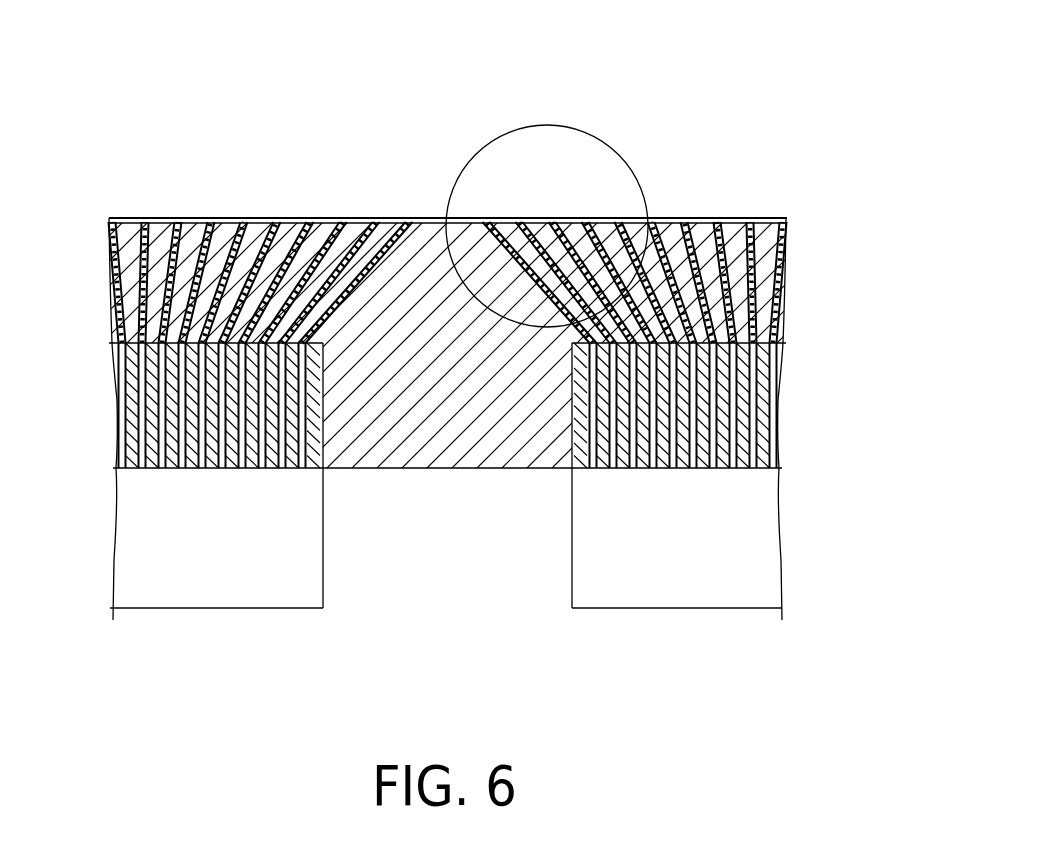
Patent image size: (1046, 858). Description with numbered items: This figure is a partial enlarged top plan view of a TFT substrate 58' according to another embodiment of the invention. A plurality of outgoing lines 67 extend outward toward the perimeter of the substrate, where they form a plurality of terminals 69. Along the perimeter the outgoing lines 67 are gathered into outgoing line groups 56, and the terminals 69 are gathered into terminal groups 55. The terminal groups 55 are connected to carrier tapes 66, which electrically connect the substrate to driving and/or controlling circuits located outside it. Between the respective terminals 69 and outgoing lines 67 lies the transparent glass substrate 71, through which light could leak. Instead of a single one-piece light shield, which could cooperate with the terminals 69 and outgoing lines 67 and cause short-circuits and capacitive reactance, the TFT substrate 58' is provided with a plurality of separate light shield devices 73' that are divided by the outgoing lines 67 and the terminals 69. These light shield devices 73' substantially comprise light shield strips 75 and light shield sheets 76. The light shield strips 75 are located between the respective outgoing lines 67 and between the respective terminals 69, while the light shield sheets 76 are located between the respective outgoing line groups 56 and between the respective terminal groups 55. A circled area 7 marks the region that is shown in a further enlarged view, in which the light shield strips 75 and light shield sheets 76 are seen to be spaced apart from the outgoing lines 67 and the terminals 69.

The TFT substrate 58' is at (846, 55).
The area 7 is at (577, 125).
The outgoing line groups 56 is at (430, 178).
The light shield strips 75 is at (168, 218).
The outgoing lines 67 is at (120, 287).
The terminals 69 is at (130, 397).
The terminal groups 55 is at (320, 477).
The light shield devices 73' is at (364, 438).
The light shield sheets 76 is at (432, 430).
The transparent glass substrate 71 is at (505, 468).
The carrier tapes 66 is at (303, 568).